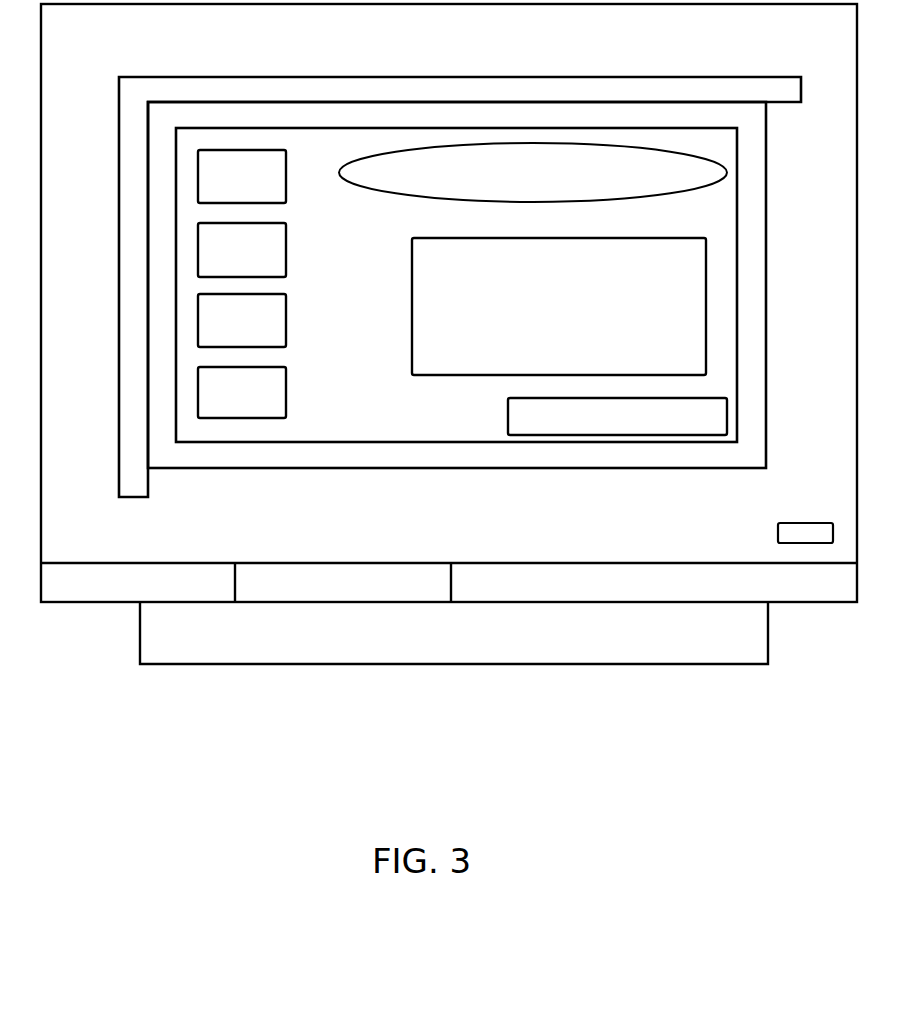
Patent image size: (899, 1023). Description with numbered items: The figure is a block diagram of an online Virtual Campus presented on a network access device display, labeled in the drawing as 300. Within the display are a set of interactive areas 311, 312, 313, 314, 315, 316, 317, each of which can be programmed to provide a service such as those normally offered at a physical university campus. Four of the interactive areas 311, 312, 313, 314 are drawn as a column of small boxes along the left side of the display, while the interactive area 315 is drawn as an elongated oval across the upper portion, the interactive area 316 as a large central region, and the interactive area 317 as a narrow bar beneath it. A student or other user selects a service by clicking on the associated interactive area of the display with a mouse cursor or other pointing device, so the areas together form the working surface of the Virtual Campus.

The display device 300 is at (375, 645).
The interactive area 311 is at (283, 192).
The interactive area 312 is at (283, 266).
The interactive area 313 is at (283, 335).
The interactive area 314 is at (283, 408).
The interactive area 315 is at (627, 187).
The interactive area 316 is at (456, 246).
The interactive area 317 is at (515, 427).